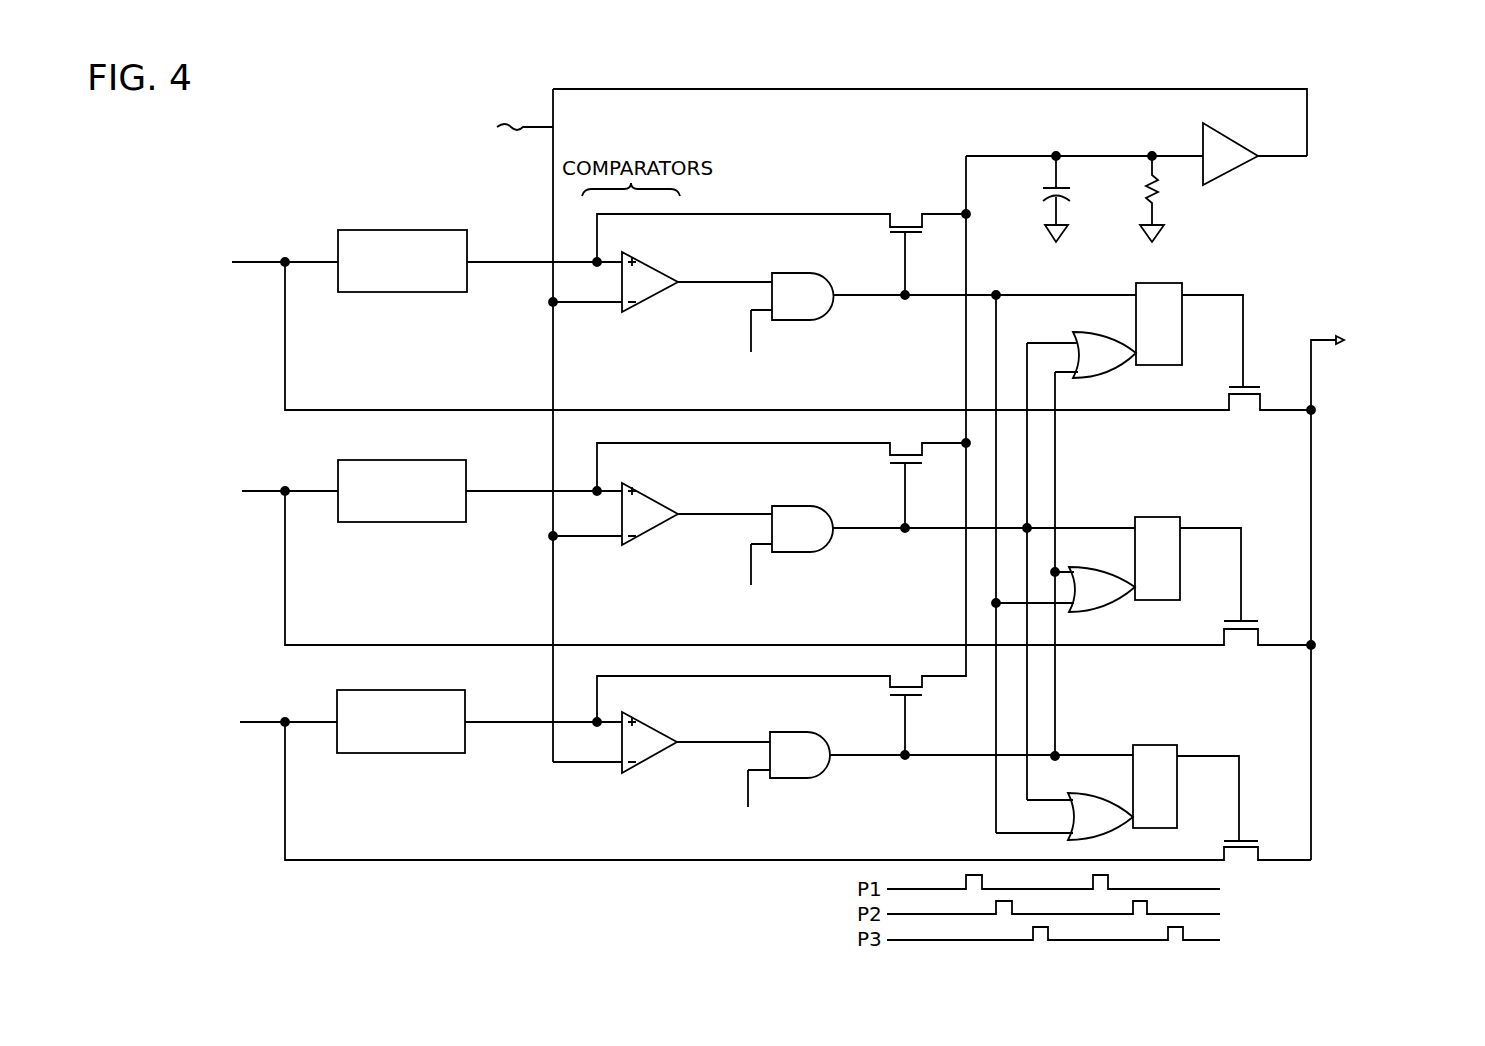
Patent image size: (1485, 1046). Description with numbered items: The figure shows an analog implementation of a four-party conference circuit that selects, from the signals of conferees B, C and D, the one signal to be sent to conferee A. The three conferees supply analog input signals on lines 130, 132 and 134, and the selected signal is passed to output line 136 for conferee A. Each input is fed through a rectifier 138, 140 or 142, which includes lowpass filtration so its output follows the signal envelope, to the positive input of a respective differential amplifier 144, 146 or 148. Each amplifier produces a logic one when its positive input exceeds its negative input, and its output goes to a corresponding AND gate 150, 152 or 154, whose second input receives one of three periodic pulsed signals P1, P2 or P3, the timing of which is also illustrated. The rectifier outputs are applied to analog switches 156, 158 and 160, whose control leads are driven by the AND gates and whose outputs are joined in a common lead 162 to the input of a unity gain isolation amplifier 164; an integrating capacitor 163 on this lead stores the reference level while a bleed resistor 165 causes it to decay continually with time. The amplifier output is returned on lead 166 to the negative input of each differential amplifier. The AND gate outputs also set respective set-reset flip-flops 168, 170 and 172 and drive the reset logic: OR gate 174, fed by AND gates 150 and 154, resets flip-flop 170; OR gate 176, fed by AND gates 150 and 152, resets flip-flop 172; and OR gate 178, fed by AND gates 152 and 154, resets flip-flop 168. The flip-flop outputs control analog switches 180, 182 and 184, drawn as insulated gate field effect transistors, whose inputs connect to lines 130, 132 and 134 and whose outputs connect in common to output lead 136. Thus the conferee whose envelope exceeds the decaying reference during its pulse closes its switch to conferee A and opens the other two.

The input line 130 is at (265, 262).
The input line 132 is at (271, 491).
The input line 134 is at (275, 722).
The output line 136 is at (1311, 361).
The rectifier 138 is at (429, 230).
The rectifier 140 is at (444, 462).
The rectifier 142 is at (446, 690).
The differential amplifier 144 is at (658, 276).
The differential amplifier 146 is at (658, 506).
The differential amplifier 148 is at (658, 734).
The AND gate 150 is at (804, 274).
The AND gate 152 is at (798, 504).
The AND gate 154 is at (811, 732).
The analog switch 156 is at (909, 216).
The analog switch 158 is at (909, 446).
The analog switch 160 is at (909, 684).
The common lead 162 is at (986, 155).
The integrating capacitor 163 is at (1068, 194).
The isolation amplifier 164 is at (1232, 140).
The bleed resistor 165 is at (1155, 202).
The lead 166 is at (925, 89).
The set-reset flip-flop 168 is at (1155, 283).
The set-reset flip-flop 170 is at (1158, 517).
The set-reset flip-flop 172 is at (1150, 745).
The OR gate 174 is at (1097, 614).
The OR gate 176 is at (1083, 793).
The OR gate 178 is at (1098, 380).
The analog switch 180 is at (1248, 404).
The analog switch 182 is at (1244, 639).
The analog switch 184 is at (1244, 856).